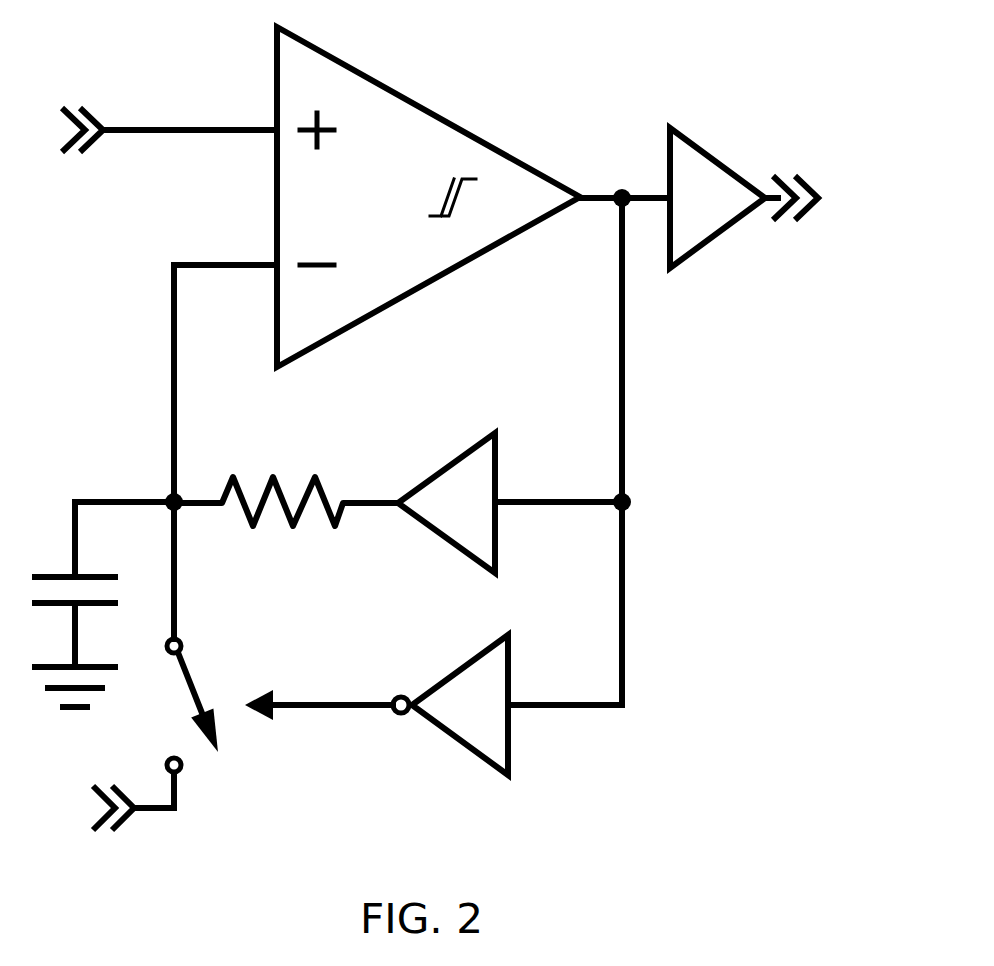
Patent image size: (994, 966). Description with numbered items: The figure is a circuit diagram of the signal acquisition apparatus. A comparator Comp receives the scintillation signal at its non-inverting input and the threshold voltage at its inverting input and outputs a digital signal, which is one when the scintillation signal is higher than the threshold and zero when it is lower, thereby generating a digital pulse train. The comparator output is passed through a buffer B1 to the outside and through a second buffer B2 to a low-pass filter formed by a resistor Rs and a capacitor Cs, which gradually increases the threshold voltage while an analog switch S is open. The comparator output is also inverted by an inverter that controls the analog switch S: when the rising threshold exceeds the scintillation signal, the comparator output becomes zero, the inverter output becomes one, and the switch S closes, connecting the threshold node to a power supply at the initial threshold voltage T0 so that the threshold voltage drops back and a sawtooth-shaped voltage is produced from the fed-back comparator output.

The comparator Comp is at (428, 197).
The buffer B1 is at (744, 217).
The buffer B2 is at (514, 516).
The resistor Rs is at (281, 534).
The capacitor Cs is at (104, 604).
The analog switch S is at (248, 748).
The initial threshold voltage T0 is at (98, 809).